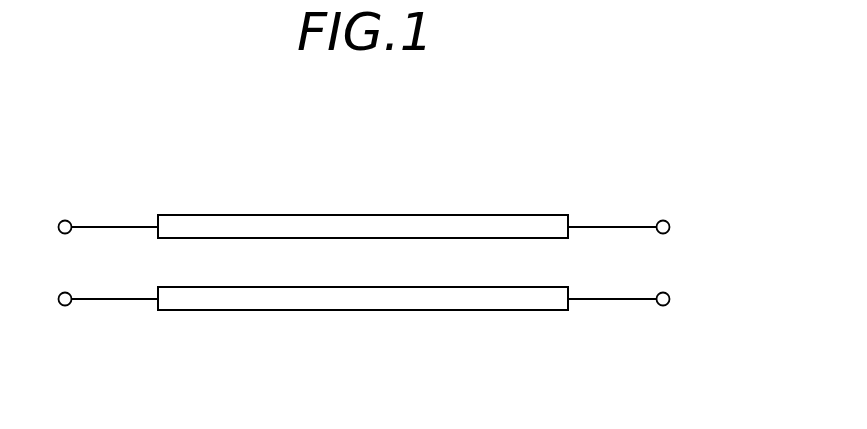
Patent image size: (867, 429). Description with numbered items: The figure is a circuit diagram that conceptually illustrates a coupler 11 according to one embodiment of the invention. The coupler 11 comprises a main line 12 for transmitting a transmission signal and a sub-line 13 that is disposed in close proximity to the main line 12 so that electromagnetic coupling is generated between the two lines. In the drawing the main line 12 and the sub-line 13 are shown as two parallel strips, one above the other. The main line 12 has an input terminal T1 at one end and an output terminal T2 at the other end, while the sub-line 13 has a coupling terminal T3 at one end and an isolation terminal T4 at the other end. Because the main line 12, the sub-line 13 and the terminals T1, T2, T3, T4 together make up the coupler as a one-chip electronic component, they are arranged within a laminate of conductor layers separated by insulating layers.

The coupler 11 is at (557, 147).
The main line 12 is at (368, 215).
The sub-line 13 is at (370, 311).
The input terminal T1 is at (95, 212).
The output terminal T2 is at (655, 212).
The coupling terminal T3 is at (89, 333).
The isolation terminal T4 is at (643, 333).